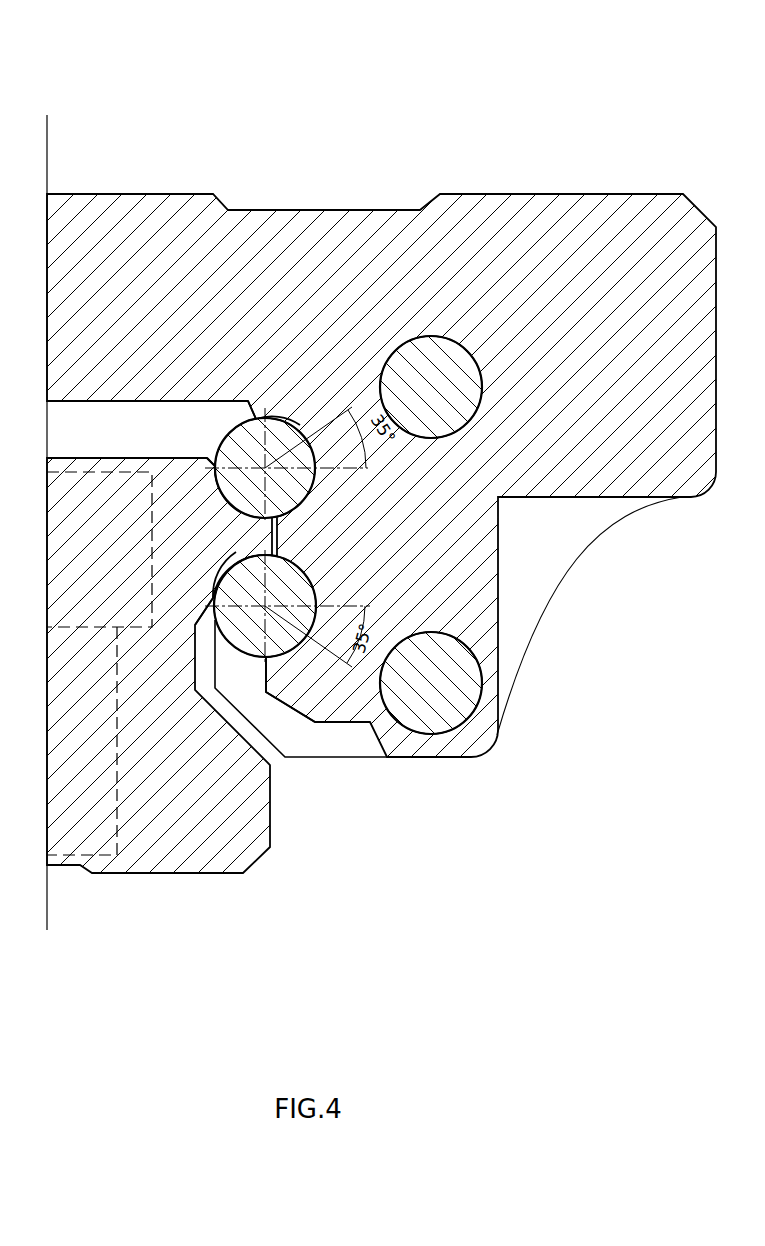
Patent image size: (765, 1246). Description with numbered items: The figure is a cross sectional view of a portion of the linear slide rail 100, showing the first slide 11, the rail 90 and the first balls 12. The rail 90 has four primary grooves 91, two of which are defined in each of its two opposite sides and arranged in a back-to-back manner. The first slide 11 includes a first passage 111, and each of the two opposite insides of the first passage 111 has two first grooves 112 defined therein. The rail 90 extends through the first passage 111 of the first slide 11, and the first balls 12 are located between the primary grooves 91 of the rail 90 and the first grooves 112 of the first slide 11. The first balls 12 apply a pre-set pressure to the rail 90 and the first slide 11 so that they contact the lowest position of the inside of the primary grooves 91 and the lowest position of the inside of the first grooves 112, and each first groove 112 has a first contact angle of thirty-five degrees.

The linear slide rail 100 is at (589, 76).
The first slide 11 is at (637, 210).
The first balls 12 is at (243, 442).
The first grooves 112 is at (292, 410).
The first passage 111 is at (266, 678).
The rail 90 is at (215, 873).
The primary grooves 91 is at (220, 492).